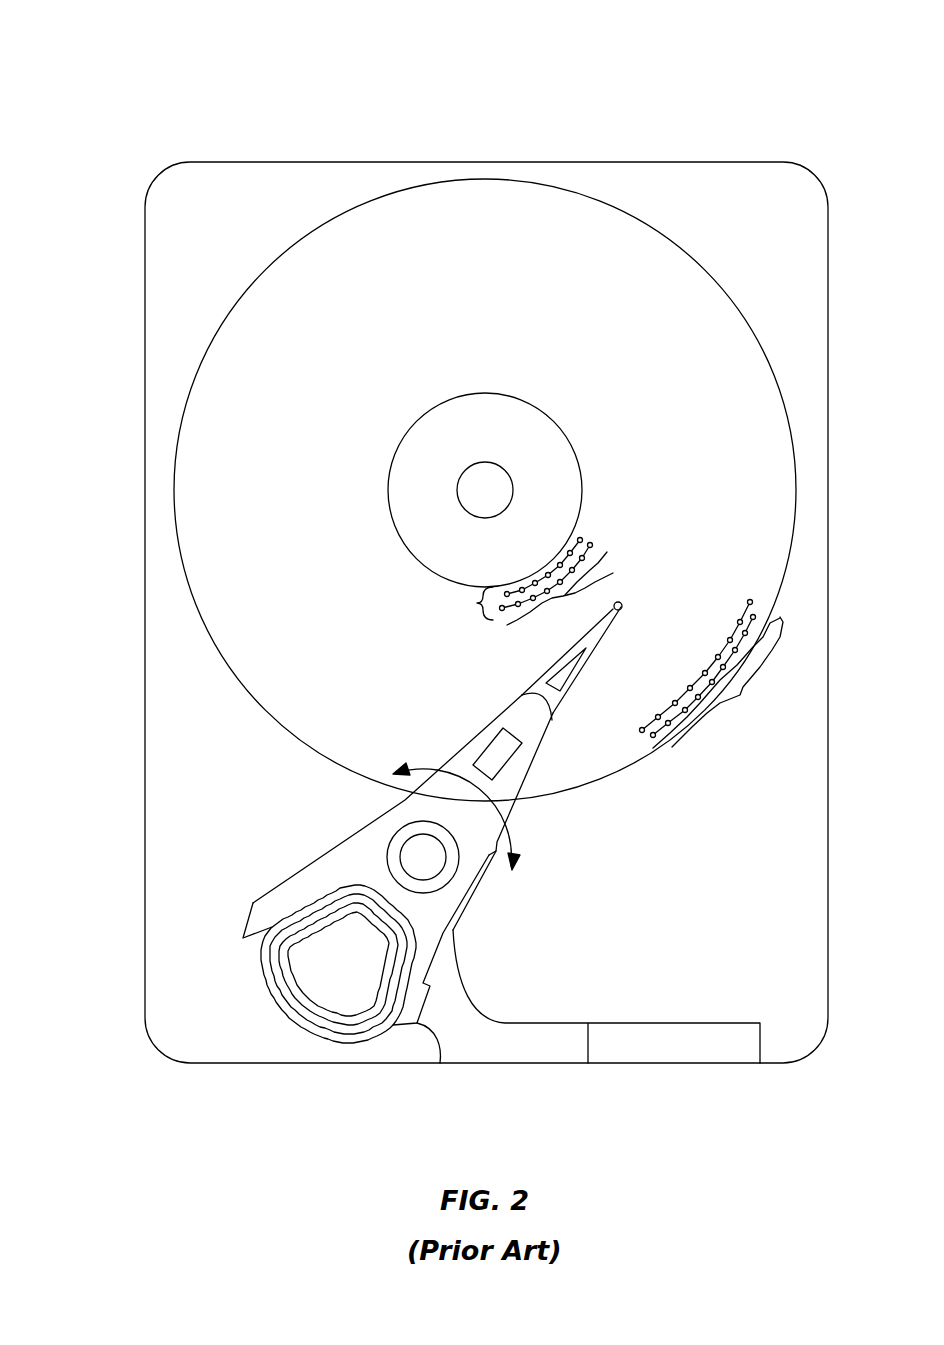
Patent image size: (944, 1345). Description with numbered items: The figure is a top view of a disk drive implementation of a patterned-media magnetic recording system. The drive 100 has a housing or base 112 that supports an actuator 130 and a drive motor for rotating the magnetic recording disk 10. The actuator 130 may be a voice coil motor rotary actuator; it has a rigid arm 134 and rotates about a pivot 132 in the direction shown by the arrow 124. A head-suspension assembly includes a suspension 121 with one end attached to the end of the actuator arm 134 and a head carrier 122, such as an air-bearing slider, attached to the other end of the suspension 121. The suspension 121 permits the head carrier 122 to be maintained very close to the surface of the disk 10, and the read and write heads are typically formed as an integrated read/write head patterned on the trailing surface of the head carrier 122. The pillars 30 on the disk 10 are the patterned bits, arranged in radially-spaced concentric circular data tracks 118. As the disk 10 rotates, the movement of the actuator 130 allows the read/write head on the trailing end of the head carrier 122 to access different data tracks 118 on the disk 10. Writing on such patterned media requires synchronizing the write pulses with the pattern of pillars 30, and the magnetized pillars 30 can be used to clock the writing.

The drive 100 is at (145, 68).
The housing or base 112 is at (743, 162).
The magnetic recording disk 10 is at (322, 226).
The data tracks 118 is at (477, 604).
The pillars 30 is at (645, 650).
The head carrier 122 is at (623, 609).
The suspension 121 is at (538, 687).
The rigid arm 134 is at (470, 748).
The pivot 132 is at (413, 850).
The arrow 124 is at (510, 836).
The actuator 130 is at (246, 927).